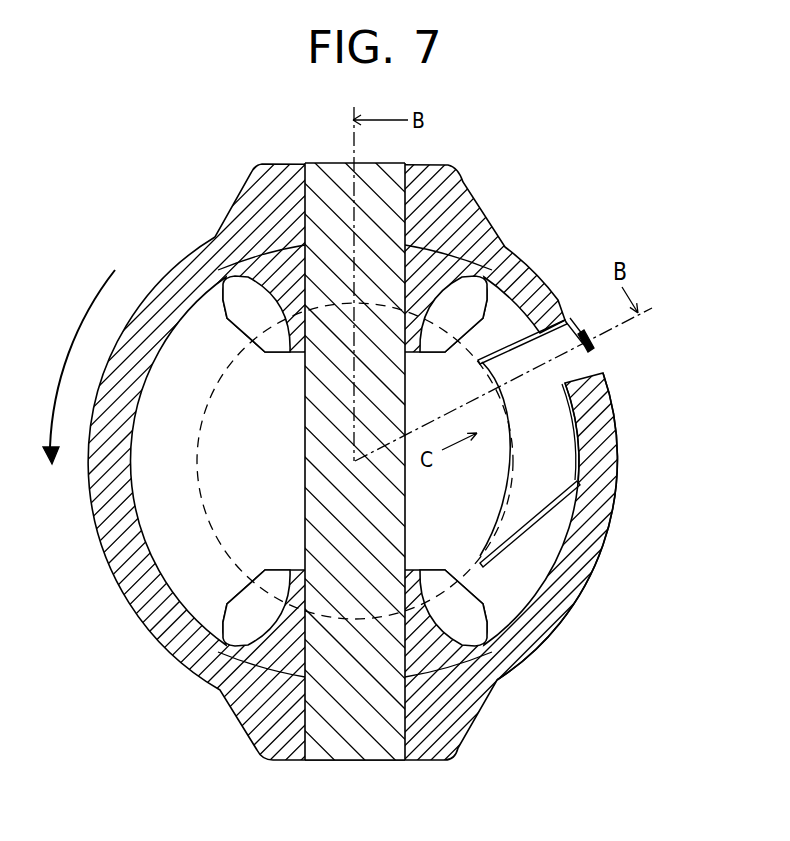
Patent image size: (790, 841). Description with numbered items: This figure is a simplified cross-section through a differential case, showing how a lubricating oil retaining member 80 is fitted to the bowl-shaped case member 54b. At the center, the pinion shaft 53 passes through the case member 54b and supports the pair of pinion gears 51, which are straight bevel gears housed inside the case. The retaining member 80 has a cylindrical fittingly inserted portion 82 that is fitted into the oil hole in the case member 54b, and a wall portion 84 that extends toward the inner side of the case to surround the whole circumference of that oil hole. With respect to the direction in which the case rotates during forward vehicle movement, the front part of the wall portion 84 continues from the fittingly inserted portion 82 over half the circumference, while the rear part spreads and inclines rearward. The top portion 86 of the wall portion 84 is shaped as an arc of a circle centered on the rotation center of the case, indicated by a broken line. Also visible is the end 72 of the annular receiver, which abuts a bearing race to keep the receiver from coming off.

The pinion gear 51 is at (281, 296).
The pinion shaft 53 is at (327, 270).
The bowl-shaped case member 54b is at (528, 663).
The end 72 is at (510, 342).
The lubricating oil retaining member 80 is at (545, 428).
The fittingly inserted portion 82 is at (587, 350).
The wall portion 84 is at (546, 495).
The top portion 86 is at (495, 500).